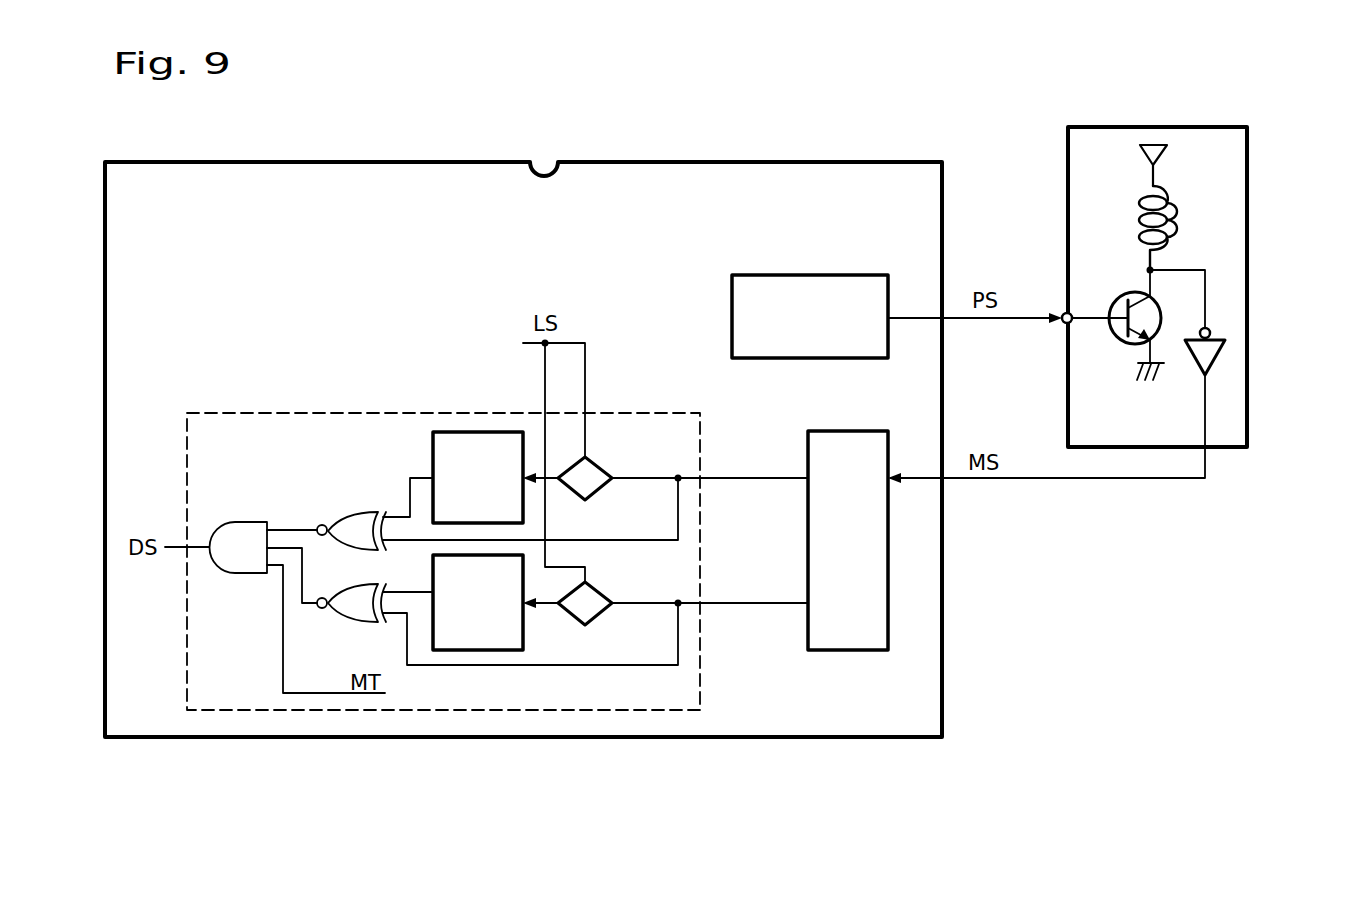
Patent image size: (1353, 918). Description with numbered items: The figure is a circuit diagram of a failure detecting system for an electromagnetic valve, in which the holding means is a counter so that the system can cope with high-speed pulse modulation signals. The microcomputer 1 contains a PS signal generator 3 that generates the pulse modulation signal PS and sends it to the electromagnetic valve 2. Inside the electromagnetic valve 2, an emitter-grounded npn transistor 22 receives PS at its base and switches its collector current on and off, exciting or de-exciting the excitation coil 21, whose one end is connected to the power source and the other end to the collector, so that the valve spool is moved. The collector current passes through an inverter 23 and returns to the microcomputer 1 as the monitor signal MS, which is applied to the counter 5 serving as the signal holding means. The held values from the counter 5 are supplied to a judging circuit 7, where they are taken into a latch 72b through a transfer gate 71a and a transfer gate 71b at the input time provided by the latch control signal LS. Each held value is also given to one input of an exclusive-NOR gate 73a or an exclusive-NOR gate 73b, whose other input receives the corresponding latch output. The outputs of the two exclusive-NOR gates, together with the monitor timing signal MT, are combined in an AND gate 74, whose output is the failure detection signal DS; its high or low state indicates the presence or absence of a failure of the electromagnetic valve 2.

The microcomputer 1 is at (770, 160).
The electromagnetic valve 2 is at (1133, 137).
The PS signal generator 3 is at (828, 275).
The flip-flop circuit 5 is at (847, 431).
The judging circuit 7 is at (648, 412).
The excitation coil 21 is at (1170, 217).
The npn transistor 22 is at (1112, 300).
The inverter 23 is at (1210, 350).
The transfer gate 71a is at (600, 462).
The transfer gate 71b is at (598, 592).
The latch 72b is at (470, 431).
The exclusive-NOR gate 73a is at (367, 512).
The exclusive-NOR gate 73b is at (360, 622).
The AND gate 74 is at (243, 521).